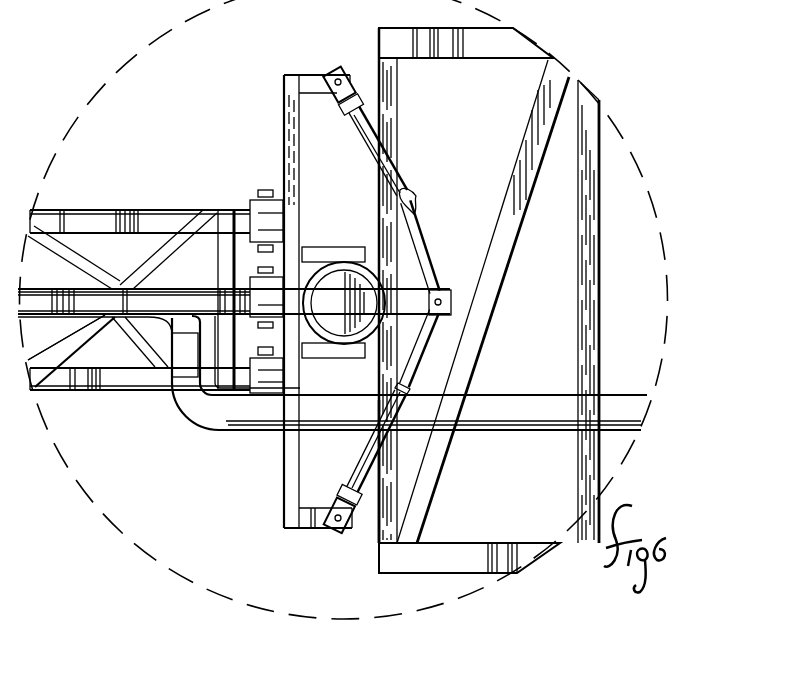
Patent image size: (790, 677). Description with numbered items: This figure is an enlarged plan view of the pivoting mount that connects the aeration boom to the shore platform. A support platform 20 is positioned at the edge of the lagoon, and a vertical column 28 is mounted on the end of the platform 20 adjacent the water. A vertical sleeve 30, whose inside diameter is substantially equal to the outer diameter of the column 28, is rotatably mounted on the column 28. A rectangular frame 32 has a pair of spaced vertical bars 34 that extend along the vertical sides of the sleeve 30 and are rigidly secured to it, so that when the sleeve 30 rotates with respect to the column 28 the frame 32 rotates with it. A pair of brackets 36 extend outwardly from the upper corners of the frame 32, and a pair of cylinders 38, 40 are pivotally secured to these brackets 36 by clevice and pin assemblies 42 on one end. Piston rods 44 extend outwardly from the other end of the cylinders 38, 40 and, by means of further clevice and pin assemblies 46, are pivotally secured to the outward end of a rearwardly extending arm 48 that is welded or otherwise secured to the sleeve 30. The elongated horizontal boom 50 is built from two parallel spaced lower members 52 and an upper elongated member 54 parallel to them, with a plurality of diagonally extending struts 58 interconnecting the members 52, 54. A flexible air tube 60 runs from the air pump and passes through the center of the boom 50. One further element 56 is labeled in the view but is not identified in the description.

The support platform 20 is at (490, 60).
The vertical column 28 is at (376, 282).
The vertical sleeve 30 is at (385, 297).
The rectangular frame 32 is at (281, 97).
The vertical bars 34 is at (347, 248).
The brackets 36 is at (371, 142).
The cylinder 38 is at (398, 146).
The cylinder 40 is at (384, 472).
The clevice and pin assemblies 42 is at (334, 70).
The piston rods 44 is at (418, 228).
The clevice and pin assemblies 46 is at (433, 313).
The rearwardly extending arm 48 is at (414, 366).
The horizontal boom 50 is at (77, 222).
The lower members 52 is at (139, 198).
The upper elongated member 54 is at (133, 325).
The conduit 56 is at (254, 198).
The diagonally extending struts 58 is at (75, 340).
The flexible air tube 60 is at (205, 408).